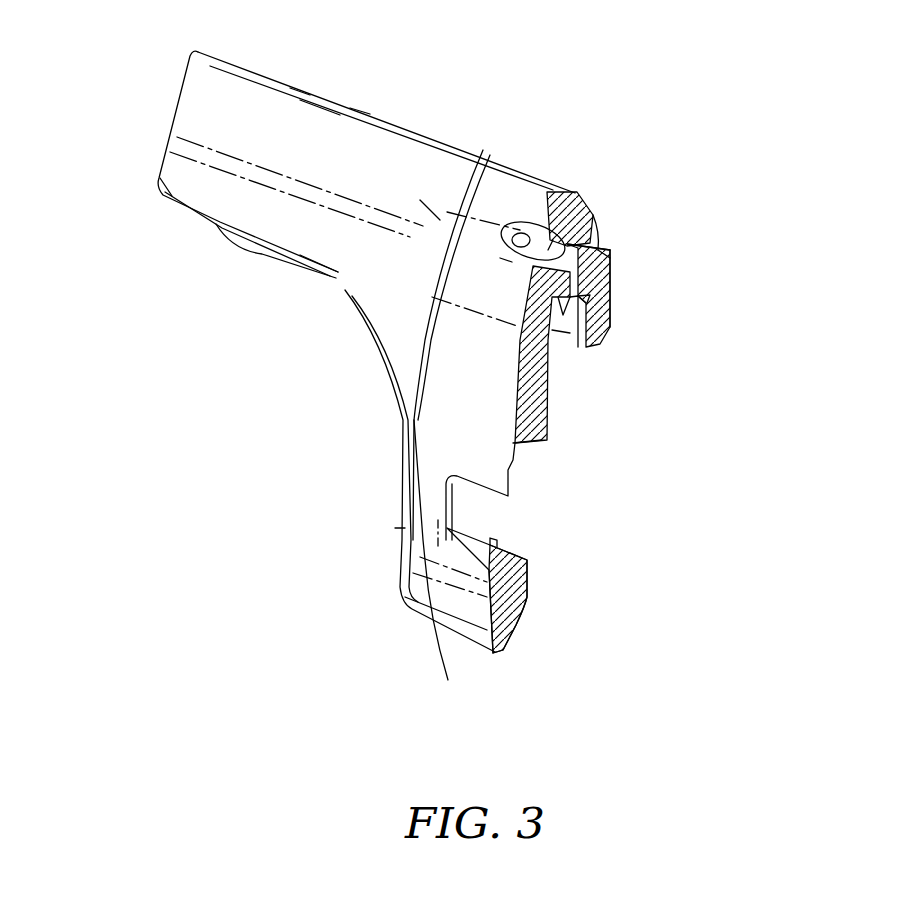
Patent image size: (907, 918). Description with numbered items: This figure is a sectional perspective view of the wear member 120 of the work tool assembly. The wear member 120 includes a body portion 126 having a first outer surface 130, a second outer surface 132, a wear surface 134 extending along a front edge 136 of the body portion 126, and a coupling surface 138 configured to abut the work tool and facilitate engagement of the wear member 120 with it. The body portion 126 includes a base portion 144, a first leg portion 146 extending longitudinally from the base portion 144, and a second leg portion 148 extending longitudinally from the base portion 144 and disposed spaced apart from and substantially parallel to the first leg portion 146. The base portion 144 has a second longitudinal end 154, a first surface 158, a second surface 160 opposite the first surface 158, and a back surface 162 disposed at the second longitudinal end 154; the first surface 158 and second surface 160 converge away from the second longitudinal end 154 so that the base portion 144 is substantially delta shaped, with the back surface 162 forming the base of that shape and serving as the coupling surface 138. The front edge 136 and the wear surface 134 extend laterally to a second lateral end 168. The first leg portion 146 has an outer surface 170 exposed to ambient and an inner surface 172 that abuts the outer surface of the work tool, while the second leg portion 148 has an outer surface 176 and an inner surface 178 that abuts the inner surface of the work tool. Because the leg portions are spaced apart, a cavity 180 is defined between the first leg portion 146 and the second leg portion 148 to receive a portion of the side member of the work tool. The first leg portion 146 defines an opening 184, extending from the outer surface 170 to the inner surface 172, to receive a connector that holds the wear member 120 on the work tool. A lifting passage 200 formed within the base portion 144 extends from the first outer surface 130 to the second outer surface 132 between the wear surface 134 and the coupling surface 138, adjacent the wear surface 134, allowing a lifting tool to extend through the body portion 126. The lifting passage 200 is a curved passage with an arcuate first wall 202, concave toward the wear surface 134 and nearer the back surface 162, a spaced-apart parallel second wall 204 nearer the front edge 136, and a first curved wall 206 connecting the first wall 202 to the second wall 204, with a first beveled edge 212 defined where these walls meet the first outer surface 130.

The wear member 120 is at (800, 80).
The body portion 126 is at (343, 268).
The first outer surface 130 is at (450, 278).
The second outer surface 132 is at (612, 280).
The wear surface 134 is at (302, 92).
The front edge 136 is at (357, 110).
The coupling surface 138 is at (572, 312).
The base portion 144 is at (513, 193).
The first leg portion 146 is at (472, 514).
The second leg portion 148 is at (606, 306).
The second longitudinal end 154 is at (550, 238).
The first surface 158 is at (330, 147).
The second surface 160 is at (600, 230).
The back surface 162 is at (612, 290).
The second lateral end 168 is at (172, 100).
The outer surface 170 is at (433, 420).
The inner surface 172 is at (548, 410).
The outer surface 176 is at (602, 322).
The inner surface 178 is at (570, 340).
The cavity 180 is at (557, 343).
The opening 184 is at (470, 618).
The lifting passage 200 is at (605, 250).
The first wall 202 is at (590, 262).
The second wall 204 is at (540, 245).
The first curved wall 206 is at (513, 222).
The first beveled edge 212 is at (507, 258).